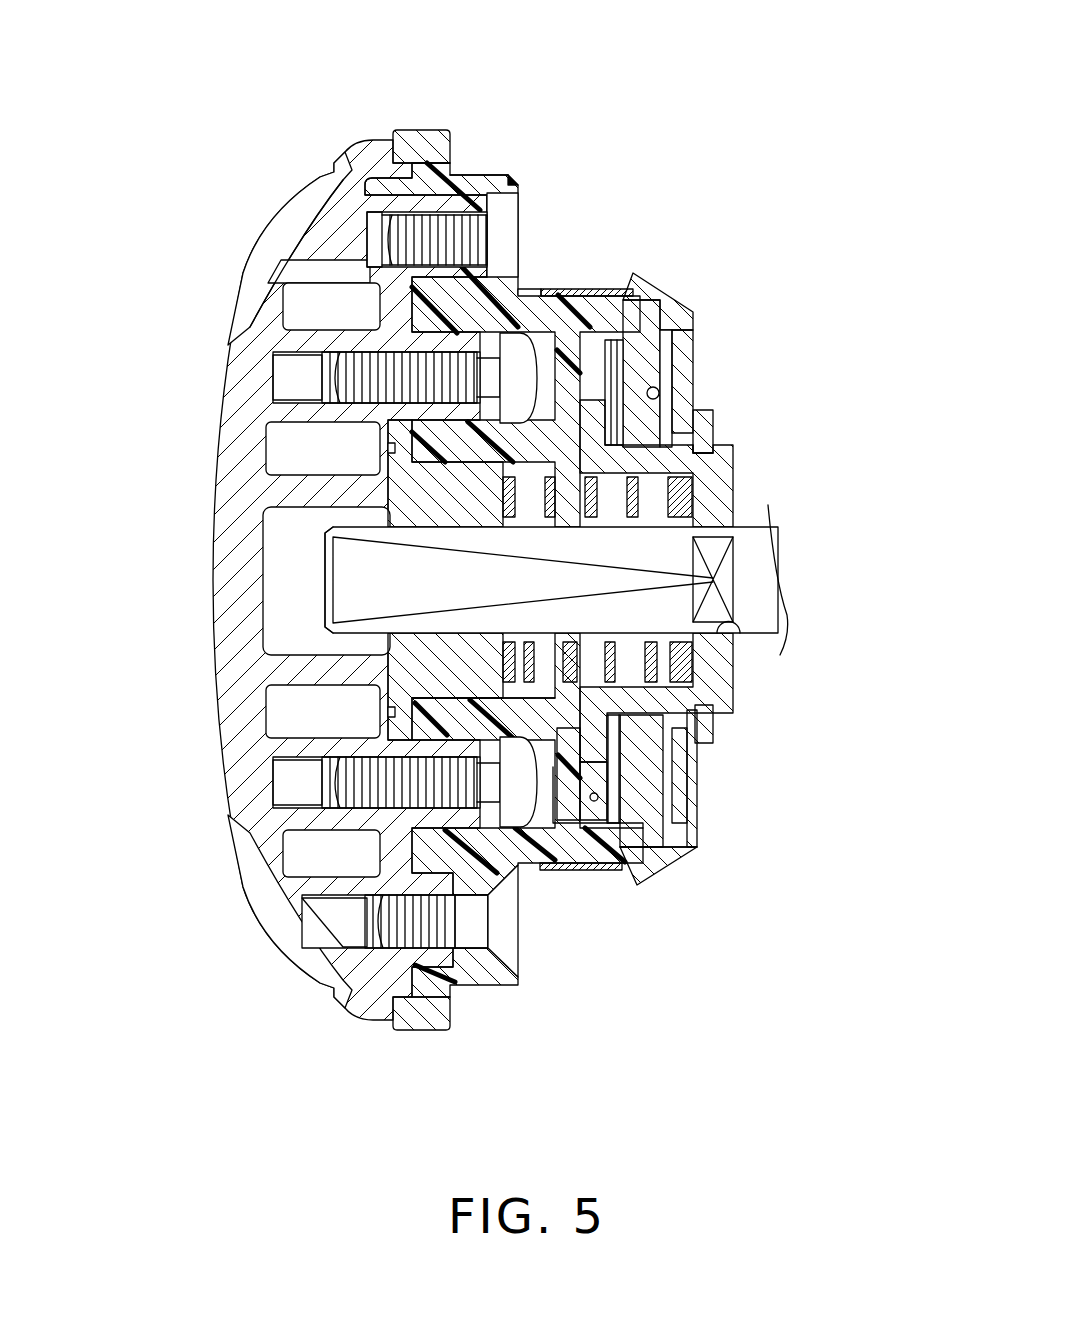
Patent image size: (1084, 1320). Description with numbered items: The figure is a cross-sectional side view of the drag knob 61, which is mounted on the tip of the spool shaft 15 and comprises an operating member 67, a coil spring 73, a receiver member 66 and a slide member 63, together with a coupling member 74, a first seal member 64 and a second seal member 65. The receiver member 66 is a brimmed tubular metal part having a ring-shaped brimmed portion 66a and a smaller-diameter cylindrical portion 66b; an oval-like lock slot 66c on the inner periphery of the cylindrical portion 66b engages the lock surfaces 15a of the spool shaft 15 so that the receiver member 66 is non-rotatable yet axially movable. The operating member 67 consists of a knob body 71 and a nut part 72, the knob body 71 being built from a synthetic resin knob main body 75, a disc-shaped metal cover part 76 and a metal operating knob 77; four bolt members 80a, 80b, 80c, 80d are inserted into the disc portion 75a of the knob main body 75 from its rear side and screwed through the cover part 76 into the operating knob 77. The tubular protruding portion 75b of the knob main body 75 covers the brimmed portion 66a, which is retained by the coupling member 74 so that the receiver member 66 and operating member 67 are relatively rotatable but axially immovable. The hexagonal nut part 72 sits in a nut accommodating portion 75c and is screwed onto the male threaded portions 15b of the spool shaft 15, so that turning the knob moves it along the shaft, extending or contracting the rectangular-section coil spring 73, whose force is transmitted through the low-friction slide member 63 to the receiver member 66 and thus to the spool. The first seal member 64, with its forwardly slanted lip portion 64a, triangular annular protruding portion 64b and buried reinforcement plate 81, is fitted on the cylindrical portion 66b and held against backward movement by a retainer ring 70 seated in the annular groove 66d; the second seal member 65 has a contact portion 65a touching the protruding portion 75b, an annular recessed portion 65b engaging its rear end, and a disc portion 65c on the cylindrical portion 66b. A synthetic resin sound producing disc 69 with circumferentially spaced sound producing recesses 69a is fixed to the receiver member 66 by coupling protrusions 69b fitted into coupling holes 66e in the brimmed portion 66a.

The spool shaft 15 is at (509, 611).
The lock surfaces 15a is at (758, 607).
The male threaded portions 15b is at (353, 637).
The drag knob 61 is at (190, 246).
The slide member 63 is at (680, 483).
The first seal member 64 is at (680, 296).
The lip portion 64a is at (636, 306).
The annular protruding portion 64b is at (652, 398).
The second seal member 65 is at (598, 286).
The contact portion 65a is at (607, 870).
The annular recessed portion 65b is at (612, 345).
The disc portion 65c is at (660, 778).
The receiver member 66 is at (745, 430).
The brimmed portion 66a is at (600, 402).
The cylindrical portion 66b is at (697, 462).
The lock slot 66c is at (733, 628).
The annular groove 66d is at (713, 748).
The coupling holes 66e is at (638, 887).
The operating member 67 is at (205, 568).
The sound producing disc 69 is at (572, 835).
The sound producing recesses 69a is at (553, 830).
The coupling protrusions 69b is at (680, 857).
The retainer ring 70 is at (692, 755).
The knob body 71 is at (478, 110).
The nut part 72 is at (400, 520).
The coil spring 73 is at (692, 510).
The coupling member 74 is at (612, 338).
The knob main body 75 is at (487, 158).
The disc portion 75a is at (422, 158).
The protruding portion 75b is at (533, 296).
The nut accommodating portion 75c is at (400, 735).
The cover part 76 is at (397, 124).
The operating knob 77 is at (288, 194).
The bolt member 80a is at (512, 200).
The bolt member 80b is at (513, 932).
The bolt member 80c is at (362, 376).
The bolt member 80d is at (387, 797).
The reinforcement plate 81 is at (693, 812).